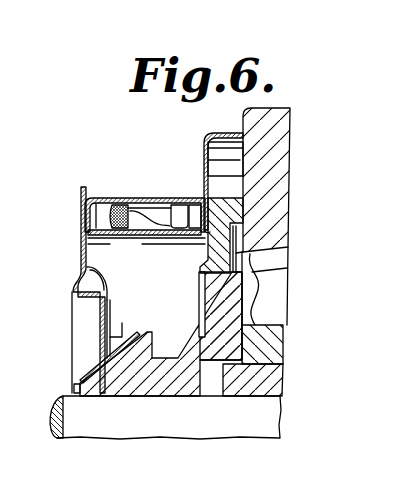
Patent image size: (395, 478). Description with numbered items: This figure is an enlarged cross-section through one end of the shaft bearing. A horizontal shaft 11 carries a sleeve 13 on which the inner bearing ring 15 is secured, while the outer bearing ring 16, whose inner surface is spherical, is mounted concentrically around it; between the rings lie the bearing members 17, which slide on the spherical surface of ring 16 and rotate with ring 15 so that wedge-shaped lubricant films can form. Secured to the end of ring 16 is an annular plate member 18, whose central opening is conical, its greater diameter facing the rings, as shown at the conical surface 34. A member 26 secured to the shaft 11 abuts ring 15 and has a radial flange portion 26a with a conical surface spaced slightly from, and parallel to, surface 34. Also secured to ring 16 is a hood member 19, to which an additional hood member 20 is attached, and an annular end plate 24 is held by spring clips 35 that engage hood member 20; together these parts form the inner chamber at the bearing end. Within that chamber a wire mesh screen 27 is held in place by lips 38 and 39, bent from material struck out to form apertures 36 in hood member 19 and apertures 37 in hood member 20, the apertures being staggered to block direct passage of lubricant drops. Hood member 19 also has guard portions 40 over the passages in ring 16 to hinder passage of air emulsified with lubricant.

The horizontal shaft 11 is at (226, 431).
The sleeve 13 is at (278, 384).
The inner bearing ring 15 is at (277, 348).
The outer bearing ring 16 is at (280, 184).
The bearing members 17 is at (282, 296).
The annular plate member 18 is at (215, 243).
The hood member 19 is at (212, 137).
The hood member 20 is at (118, 198).
The annular end plate 24 is at (97, 308).
The member 26 is at (163, 388).
The radial flange portion 26a is at (215, 307).
The wire mesh screen 27 is at (140, 208).
The conical surface 34 is at (203, 280).
The spring clip 35 is at (98, 273).
The aperture 36 is at (118, 236).
The aperture 37 is at (173, 214).
The lip 38 is at (103, 215).
The lip 39 is at (195, 218).
The guard portion 40 is at (225, 147).